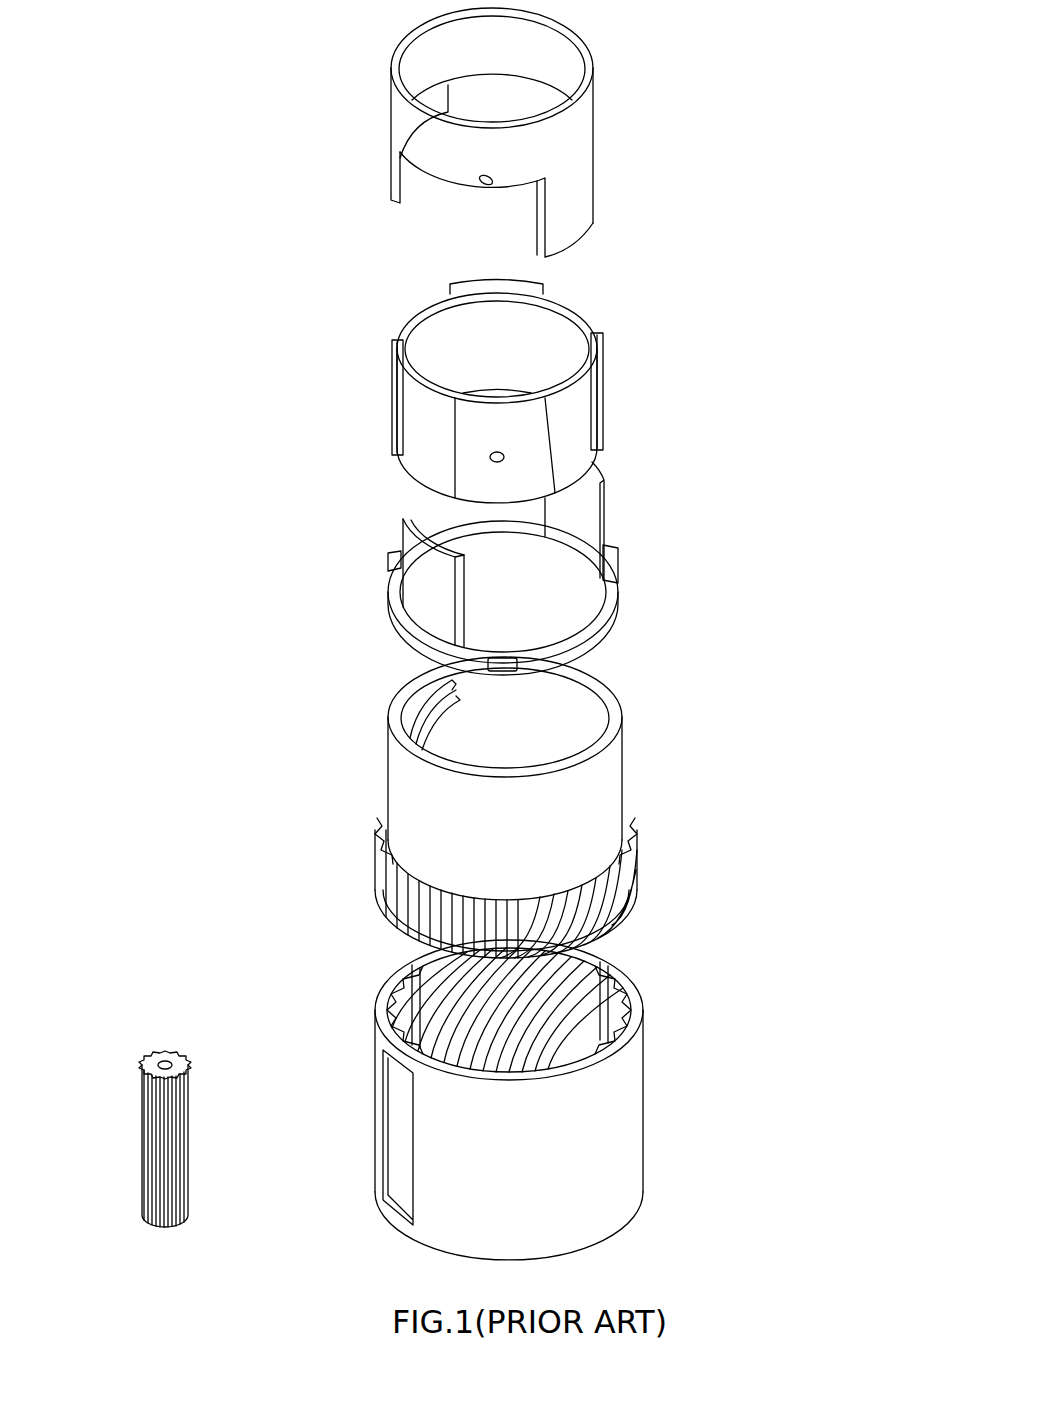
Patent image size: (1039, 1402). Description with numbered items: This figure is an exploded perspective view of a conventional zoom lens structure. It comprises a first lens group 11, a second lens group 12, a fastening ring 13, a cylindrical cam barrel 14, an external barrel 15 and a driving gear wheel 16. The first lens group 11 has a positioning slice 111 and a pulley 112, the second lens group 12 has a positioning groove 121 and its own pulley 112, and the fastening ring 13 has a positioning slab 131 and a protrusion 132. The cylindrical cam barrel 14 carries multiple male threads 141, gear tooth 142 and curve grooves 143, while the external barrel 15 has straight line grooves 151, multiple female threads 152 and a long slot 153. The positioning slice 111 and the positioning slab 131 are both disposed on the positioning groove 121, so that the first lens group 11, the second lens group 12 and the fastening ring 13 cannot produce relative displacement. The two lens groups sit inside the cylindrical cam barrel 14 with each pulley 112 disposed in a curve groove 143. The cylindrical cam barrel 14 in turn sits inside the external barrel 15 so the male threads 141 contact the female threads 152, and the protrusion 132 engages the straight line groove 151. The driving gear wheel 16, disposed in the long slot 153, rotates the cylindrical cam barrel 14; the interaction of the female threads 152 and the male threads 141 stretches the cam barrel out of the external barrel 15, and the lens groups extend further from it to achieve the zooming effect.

The first lens group 11 is at (587, 120).
The positioning slice 111 is at (577, 212).
The pulley 112 is at (480, 176).
The second lens group 12 is at (605, 355).
The positioning groove 121 is at (583, 440).
The fastening ring 13 is at (595, 605).
The positioning slab 131 is at (585, 530).
The protrusion 132 is at (397, 552).
The cylindrical cam barrel 14 is at (618, 743).
The male threads 141 is at (613, 877).
The gear tooth 142 is at (432, 935).
The curve grooves 143 is at (418, 707).
The external barrel 15 is at (637, 1160).
The straight line grooves 151 is at (608, 978).
The female threads 152 is at (607, 1018).
The long slot 153 is at (400, 1187).
The driving gear wheel 16 is at (150, 1055).